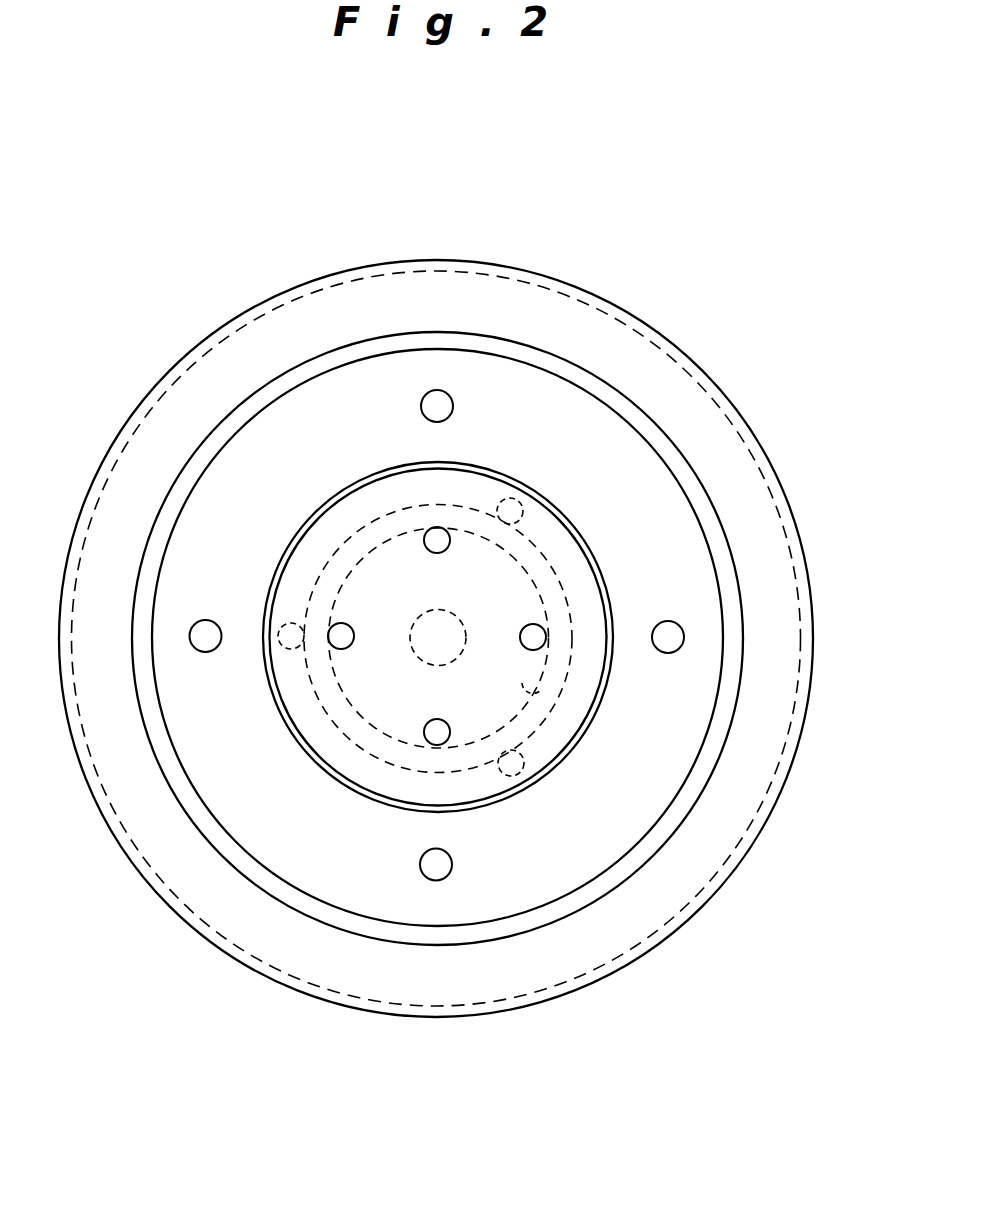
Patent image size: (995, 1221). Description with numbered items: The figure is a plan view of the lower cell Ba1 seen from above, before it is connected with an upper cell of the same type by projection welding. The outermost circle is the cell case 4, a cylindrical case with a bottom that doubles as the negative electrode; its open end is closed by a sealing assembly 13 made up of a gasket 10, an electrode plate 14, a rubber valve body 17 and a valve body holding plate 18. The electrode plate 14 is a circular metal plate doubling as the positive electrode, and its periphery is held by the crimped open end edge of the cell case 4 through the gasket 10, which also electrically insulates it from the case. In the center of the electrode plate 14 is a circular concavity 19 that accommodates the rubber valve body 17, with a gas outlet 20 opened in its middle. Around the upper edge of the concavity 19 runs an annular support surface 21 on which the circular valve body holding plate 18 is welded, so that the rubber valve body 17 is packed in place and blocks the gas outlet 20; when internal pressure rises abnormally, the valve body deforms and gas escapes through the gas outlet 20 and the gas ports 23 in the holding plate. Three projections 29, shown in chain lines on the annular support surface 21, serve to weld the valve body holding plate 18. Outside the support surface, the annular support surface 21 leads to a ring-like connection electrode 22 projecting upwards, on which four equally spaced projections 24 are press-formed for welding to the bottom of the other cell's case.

The cell case 4 is at (764, 838).
The gasket 10 is at (680, 868).
The cell Ba1 is at (806, 728).
The electrode plate 14 is at (700, 582).
The sealing assembly 13 is at (656, 753).
The connection electrode 22 is at (200, 760).
The valve body holding plate 18 is at (468, 492).
The annular support surface 21 is at (316, 540).
The rubber valve body 17 is at (510, 610).
The gas outlet 20 is at (462, 615).
The gas ports 23 is at (429, 550).
The projection 29 is at (525, 502).
The concavity 19 is at (537, 680).
The projections 24 is at (437, 390).